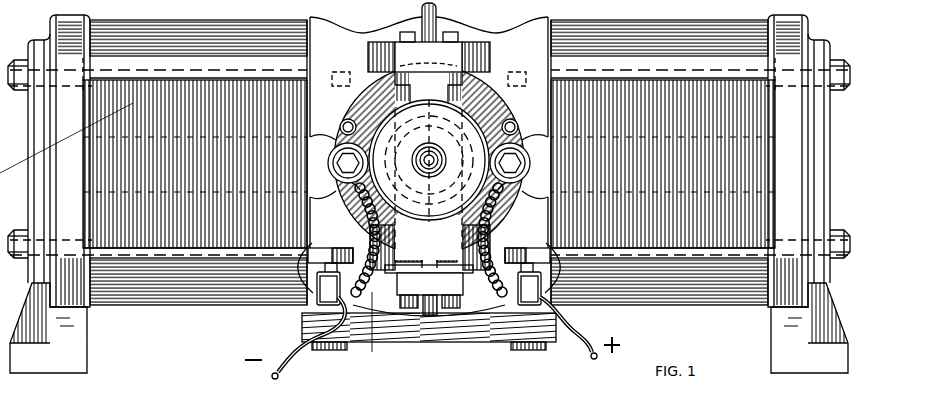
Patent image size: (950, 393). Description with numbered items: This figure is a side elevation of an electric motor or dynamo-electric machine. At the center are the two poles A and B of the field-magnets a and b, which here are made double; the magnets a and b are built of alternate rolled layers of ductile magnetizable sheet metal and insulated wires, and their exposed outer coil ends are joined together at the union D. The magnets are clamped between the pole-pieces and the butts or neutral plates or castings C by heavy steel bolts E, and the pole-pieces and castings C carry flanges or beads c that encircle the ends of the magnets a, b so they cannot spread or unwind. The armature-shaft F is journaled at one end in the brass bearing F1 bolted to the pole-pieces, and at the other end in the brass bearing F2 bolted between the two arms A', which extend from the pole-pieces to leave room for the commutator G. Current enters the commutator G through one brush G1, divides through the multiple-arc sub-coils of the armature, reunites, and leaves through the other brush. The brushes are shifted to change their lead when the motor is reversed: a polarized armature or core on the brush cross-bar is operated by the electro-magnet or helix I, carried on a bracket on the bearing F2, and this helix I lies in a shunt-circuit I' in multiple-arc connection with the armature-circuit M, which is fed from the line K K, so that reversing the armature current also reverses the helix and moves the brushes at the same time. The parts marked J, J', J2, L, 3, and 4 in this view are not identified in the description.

The pole-piece A is at (429, 159).
The arms A' is at (429, 173).
The field-magnet a is at (429, 49).
The field-magnet b is at (429, 276).
The flanges or beads c is at (429, 155).
The neutral plates or castings C is at (429, 194).
The outer union of magnet-coils D is at (429, 162).
The steel bolts E is at (429, 159).
The armature-shaft F is at (429, 353).
The brass bearing F1 is at (535, 167).
The brass bearing F2 is at (429, 151).
The commutator G is at (340, 166).
The brush G1 is at (491, 166).
The electro-magnet or helix I is at (429, 175).
The shunt-circuit I' is at (372, 332).
The binding post J is at (328, 284).
The binding post J' is at (529, 284).
The base feet J2 is at (429, 351).
The line K is at (432, 338).
The coil terminal loop L is at (431, 268).
The armature-circuit M is at (514, 240).
The pole-piece B is at (344, 240).
The brush 3 is at (335, 145).
The brush 4 is at (492, 147).